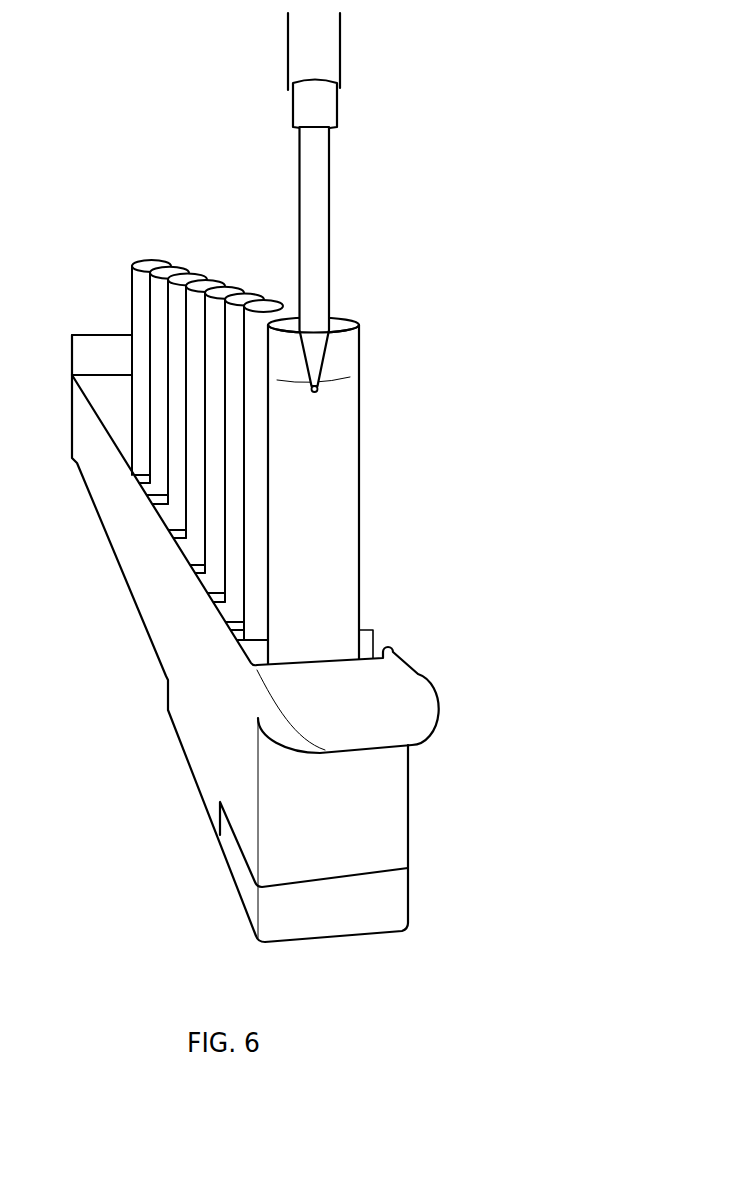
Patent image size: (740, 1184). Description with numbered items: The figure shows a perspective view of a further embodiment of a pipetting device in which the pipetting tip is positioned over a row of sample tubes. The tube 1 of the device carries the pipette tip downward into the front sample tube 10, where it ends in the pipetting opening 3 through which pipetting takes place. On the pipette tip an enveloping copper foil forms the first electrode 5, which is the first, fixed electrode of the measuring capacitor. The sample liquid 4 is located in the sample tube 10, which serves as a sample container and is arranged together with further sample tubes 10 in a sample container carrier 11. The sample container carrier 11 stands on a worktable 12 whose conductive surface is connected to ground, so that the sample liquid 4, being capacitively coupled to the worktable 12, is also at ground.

The tube 1 is at (312, 180).
The first electrode 5 is at (330, 210).
The pipetting opening 3 is at (318, 391).
The sample liquid 4 is at (328, 467).
The sample tube 10 is at (361, 543).
The sample container carrier 11 is at (150, 584).
The worktable 12 is at (107, 709).